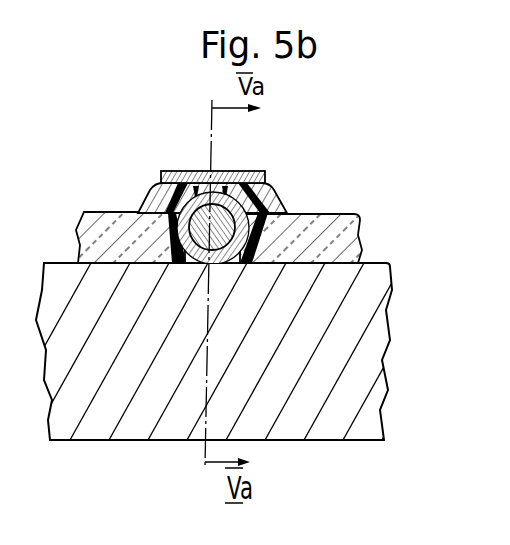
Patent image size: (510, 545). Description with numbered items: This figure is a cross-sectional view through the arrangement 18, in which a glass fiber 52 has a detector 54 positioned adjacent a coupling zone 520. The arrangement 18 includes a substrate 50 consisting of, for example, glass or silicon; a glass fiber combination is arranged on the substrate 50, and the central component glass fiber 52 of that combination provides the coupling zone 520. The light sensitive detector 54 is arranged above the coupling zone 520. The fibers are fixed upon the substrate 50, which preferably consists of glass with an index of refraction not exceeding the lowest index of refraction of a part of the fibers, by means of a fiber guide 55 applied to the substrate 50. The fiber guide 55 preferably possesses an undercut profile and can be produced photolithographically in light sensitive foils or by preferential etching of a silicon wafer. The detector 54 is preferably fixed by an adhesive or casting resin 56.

The arrangement 18 is at (312, 180).
The substrate 50 is at (378, 350).
The glass fiber 52 is at (190, 169).
The detector 54 is at (258, 172).
The fiber guide 55 is at (107, 213).
The adhesive or casting resin 56 is at (148, 189).
The coupling zone 520 is at (214, 215).